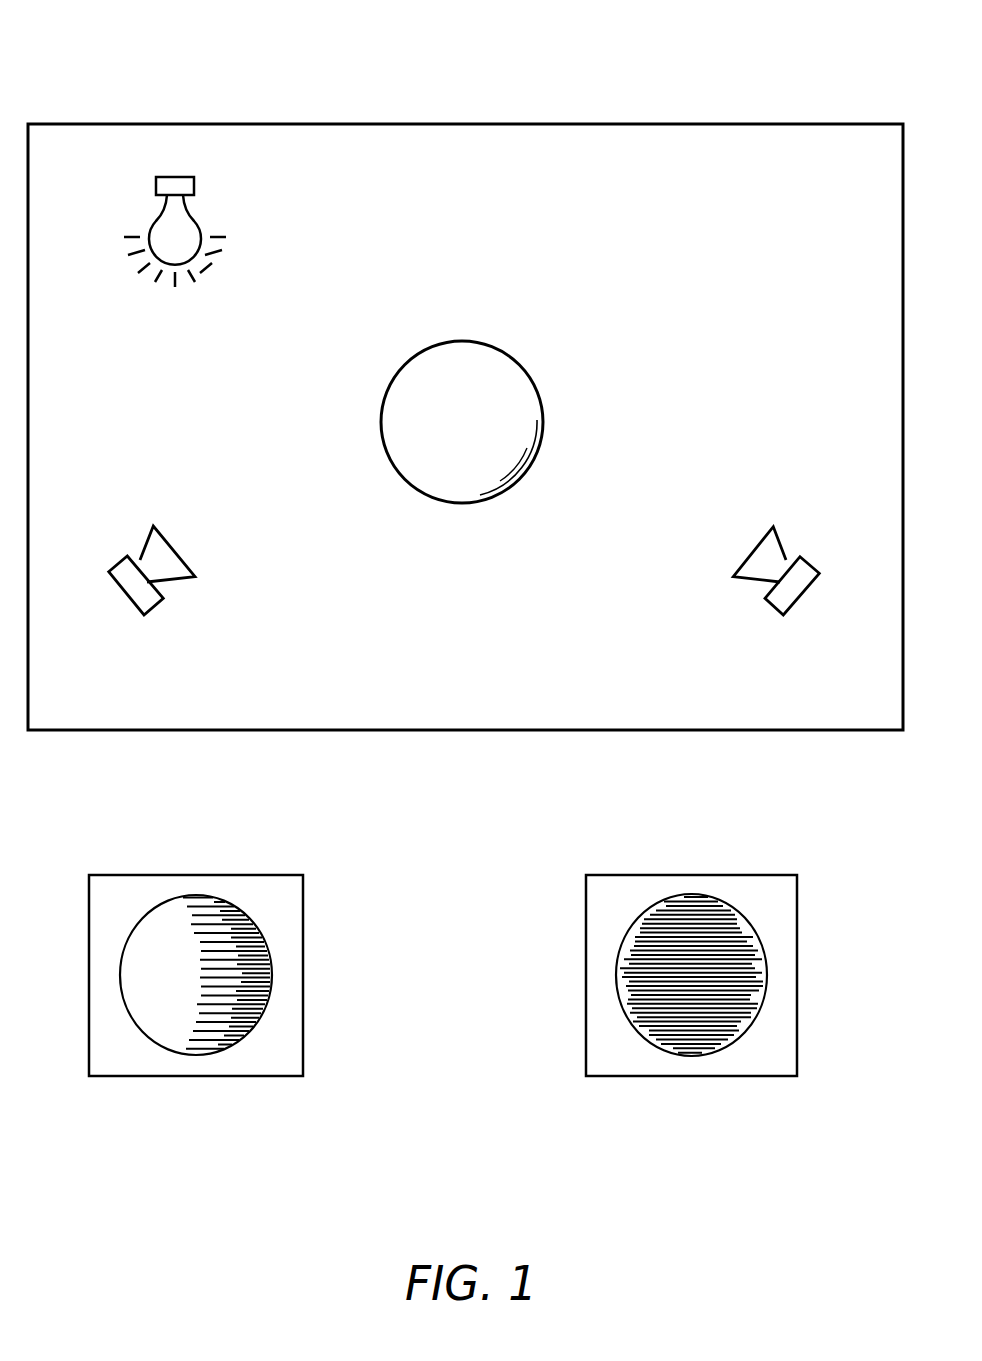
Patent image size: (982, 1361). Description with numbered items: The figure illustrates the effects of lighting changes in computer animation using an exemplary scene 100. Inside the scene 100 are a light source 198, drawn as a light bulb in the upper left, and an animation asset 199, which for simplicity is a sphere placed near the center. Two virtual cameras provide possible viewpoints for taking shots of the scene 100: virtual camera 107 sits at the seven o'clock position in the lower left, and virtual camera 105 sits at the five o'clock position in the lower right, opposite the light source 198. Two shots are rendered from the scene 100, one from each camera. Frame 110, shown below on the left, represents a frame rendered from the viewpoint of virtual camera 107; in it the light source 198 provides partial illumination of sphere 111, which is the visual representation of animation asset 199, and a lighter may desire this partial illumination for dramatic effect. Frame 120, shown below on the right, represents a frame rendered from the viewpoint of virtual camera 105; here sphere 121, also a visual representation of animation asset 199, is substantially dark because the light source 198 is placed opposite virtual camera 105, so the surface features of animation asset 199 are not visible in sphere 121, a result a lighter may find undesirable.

The scene 100 is at (708, 89).
The light source 198 is at (197, 185).
The animation asset 199 is at (543, 421).
The virtual camera 107 is at (121, 590).
The virtual camera 105 is at (805, 592).
The frame 110 is at (224, 989).
The sphere 111 is at (272, 973).
The frame 120 is at (687, 989).
The sphere 121 is at (616, 975).